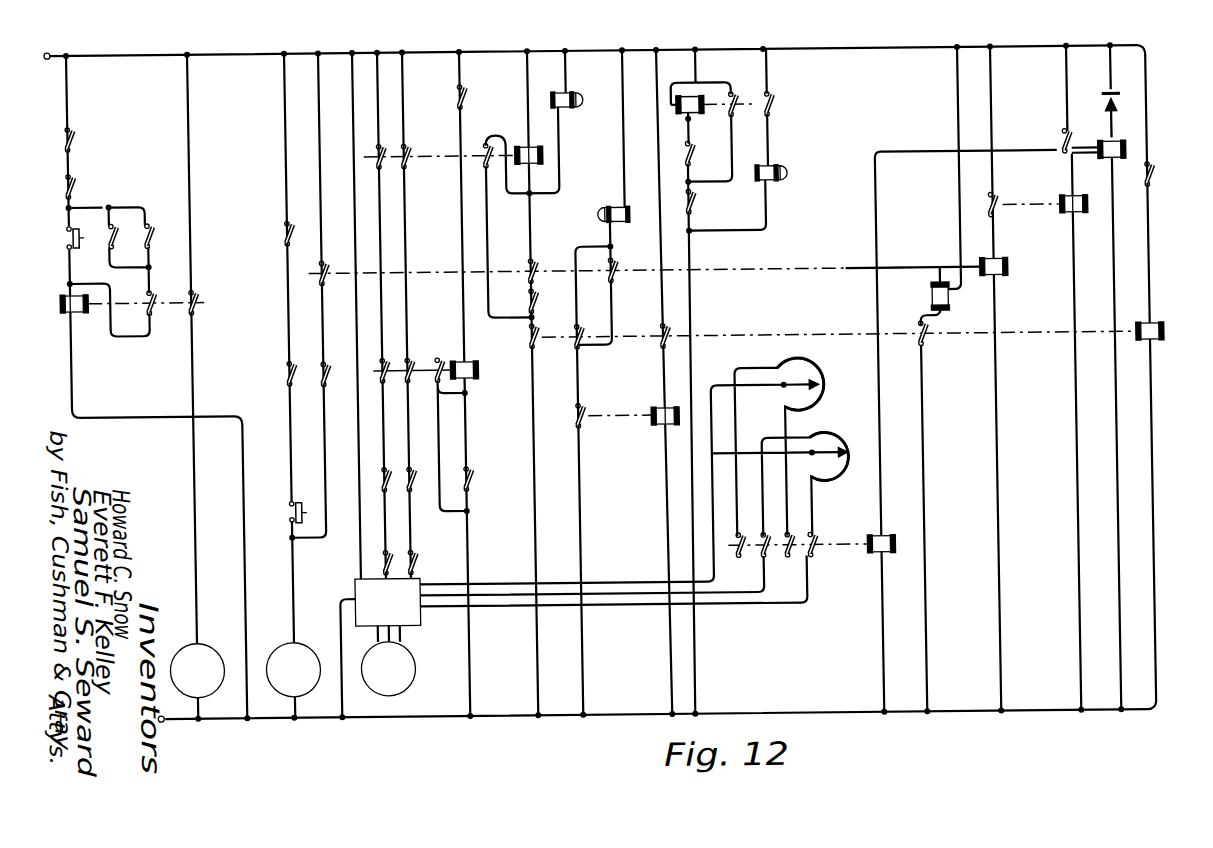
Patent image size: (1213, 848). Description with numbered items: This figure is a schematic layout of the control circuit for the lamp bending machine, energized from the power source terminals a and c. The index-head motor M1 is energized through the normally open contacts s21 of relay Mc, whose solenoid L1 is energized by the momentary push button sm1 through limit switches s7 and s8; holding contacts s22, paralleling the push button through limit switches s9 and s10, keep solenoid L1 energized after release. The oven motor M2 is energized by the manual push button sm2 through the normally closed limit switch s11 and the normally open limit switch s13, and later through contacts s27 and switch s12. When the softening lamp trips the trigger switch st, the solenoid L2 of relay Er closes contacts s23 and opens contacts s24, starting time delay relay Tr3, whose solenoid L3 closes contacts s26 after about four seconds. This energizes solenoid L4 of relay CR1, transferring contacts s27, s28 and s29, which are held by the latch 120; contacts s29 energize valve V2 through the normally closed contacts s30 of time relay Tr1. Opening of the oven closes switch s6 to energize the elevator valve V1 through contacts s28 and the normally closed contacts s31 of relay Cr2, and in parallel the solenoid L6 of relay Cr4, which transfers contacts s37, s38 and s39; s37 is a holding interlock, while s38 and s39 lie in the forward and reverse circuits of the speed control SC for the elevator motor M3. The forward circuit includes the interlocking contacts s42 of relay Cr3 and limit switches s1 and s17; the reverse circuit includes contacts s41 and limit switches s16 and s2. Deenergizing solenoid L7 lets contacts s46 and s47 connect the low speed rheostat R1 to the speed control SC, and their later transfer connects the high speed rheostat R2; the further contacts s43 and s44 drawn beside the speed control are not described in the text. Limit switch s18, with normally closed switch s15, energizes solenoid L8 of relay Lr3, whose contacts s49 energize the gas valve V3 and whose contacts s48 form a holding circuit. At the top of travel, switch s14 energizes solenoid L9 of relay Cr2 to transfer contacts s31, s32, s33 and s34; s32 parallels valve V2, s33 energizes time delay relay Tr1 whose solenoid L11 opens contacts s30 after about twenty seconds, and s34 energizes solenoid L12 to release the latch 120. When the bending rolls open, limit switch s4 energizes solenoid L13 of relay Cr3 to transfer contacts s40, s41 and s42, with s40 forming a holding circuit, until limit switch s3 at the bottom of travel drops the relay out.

The power source terminal a is at (45, 42).
The power source terminal c is at (169, 729).
The limit switch s7 is at (58, 145).
The limit switch s8 is at (58, 190).
The momentary contact push button switch sm1 is at (74, 222).
The limit switch s9 is at (112, 228).
The limit switch s10 is at (147, 231).
The solenoid L1 is at (62, 313).
The relay Mc is at (100, 322).
The holding contacts s22 is at (154, 318).
The normally open contacts s21 is at (193, 308).
The normally open limit switch s13 is at (281, 232).
The normally closed contacts s27 is at (312, 266).
The normally closed limit switch s12 is at (313, 369).
The normally closed limit switch s11 is at (284, 374).
The manually operated push button switch sm2 is at (280, 518).
The limit switch s3 is at (456, 92).
The normally closed contacts s39 is at (383, 150).
The normally open contacts s38 is at (404, 150).
The normally open contacts s37 is at (478, 172).
The relay Cr4 is at (520, 149).
The solenoid-operated valve V1 is at (571, 99).
The solenoid L6 is at (542, 158).
The normally open limit switch s18 is at (676, 160).
The solenoid-operated valve V2 is at (605, 213).
The normally open contacts s28 is at (530, 268).
The limit switch s6 is at (535, 308).
The normally closed contacts s31 is at (540, 348).
The normally open contacts s32 is at (577, 332).
The contacts s33 is at (660, 339).
The normally closed contacts s30 is at (582, 410).
The solenoid L8 is at (686, 100).
The relay Lr3 is at (705, 92).
The contacts s48 is at (738, 113).
The contacts s49 is at (773, 100).
The solenoid valve V3 is at (791, 181).
The normally closed limit switch s15 is at (692, 212).
The normally open contacts s29 is at (614, 270).
The contacts s41 is at (376, 364).
The normally closed interlocking contacts s42 is at (401, 365).
The contact s40 is at (431, 364).
The relay Cr3 is at (490, 349).
The solenoid L13 is at (470, 382).
The normally closed limit switch s2 is at (374, 484).
The normally closed limit switch s1 is at (416, 490).
The limit switch s4 is at (474, 482).
The normally closed limit switch s16 is at (372, 566).
The normally closed limit switch s17 is at (408, 568).
The speed control device SC is at (345, 592).
The motor M1 is at (197, 670).
The motor M2 is at (293, 670).
The motor M3 is at (388, 669).
The time delay relay Tr1 is at (660, 434).
The solenoid L11 is at (643, 437).
The low speed rheostat R1 is at (780, 368).
The high speed rheostat R2 is at (820, 440).
The solenoid L12 is at (920, 311).
The latch 120 is at (926, 314).
The relay CR1 is at (958, 276).
The solenoid L4 is at (984, 288).
The contacts s34 is at (920, 350).
The relay contacts s26 is at (986, 210).
The solenoid L3 is at (1070, 208).
The time delay relay Tr3 is at (1072, 224).
The normally closed contacts s24 is at (1062, 152).
The normally open contacts s23 is at (1068, 138).
The trigger switch st is at (1105, 106).
The relay Er is at (1116, 141).
The solenoid L2 is at (1126, 158).
The limit switch s14 is at (1151, 182).
The relay Cr2 is at (1156, 330).
The solenoid L9 is at (1154, 352).
The switch s43 is at (728, 564).
The switch s44 is at (779, 565).
The contacts s46 is at (757, 542).
The contacts s47 is at (805, 560).
The solenoid L7 is at (890, 552).